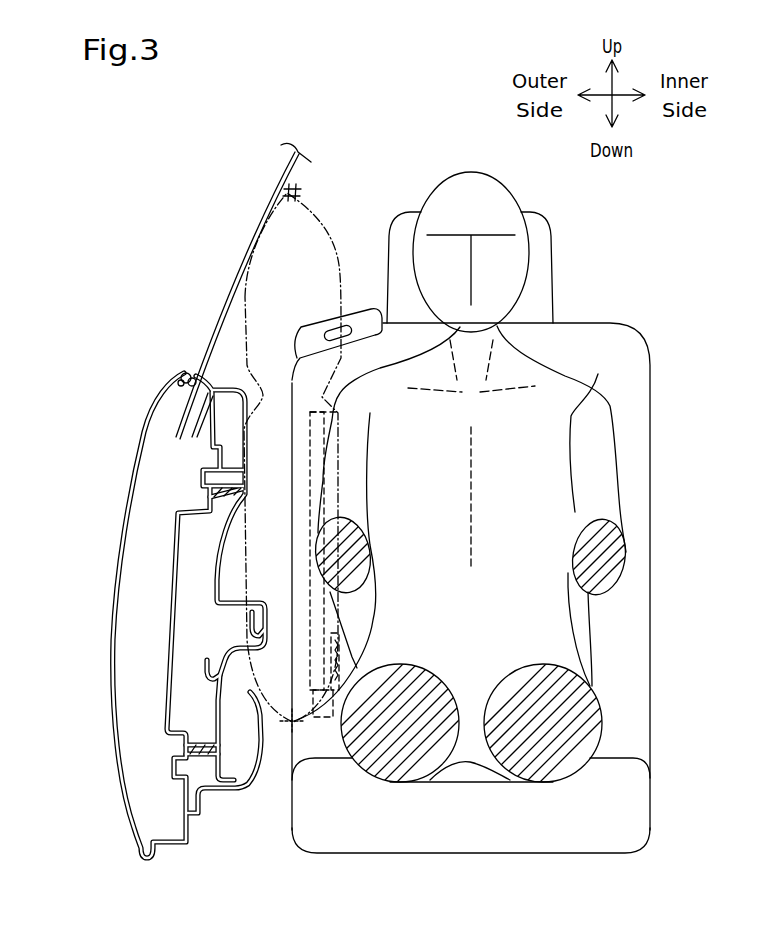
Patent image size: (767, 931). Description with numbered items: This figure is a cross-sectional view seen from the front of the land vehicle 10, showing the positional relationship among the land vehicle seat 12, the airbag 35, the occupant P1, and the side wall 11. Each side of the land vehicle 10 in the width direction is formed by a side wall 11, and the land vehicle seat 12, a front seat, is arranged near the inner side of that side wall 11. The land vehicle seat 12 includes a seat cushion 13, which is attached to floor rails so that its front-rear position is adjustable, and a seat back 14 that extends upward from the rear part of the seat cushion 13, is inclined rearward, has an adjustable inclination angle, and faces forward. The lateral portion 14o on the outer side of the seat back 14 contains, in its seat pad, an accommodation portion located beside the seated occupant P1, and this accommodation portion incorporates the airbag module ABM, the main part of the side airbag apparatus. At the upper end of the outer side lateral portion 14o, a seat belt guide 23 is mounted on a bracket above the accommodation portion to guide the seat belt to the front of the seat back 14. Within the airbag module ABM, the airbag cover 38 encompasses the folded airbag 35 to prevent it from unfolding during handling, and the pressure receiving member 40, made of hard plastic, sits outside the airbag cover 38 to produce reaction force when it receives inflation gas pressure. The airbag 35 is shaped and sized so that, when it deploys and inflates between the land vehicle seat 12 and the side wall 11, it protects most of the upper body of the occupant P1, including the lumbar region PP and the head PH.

The land vehicle 10 is at (209, 500).
The side wall 11 is at (142, 402).
The land vehicle seat 12 is at (434, 558).
The seat cushion 13 is at (312, 848).
The seat back 14 is at (452, 521).
The outer side lateral portion 14o is at (302, 562).
The seat belt guide 23 is at (350, 312).
The airbag 35 is at (327, 221).
The airbag cover 38 is at (297, 483).
The airbag module ABM is at (321, 396).
The pressure receiving member 40 is at (312, 700).
The head PH is at (530, 252).
The occupant P1 is at (522, 194).
The lumbar region PP is at (471, 507).